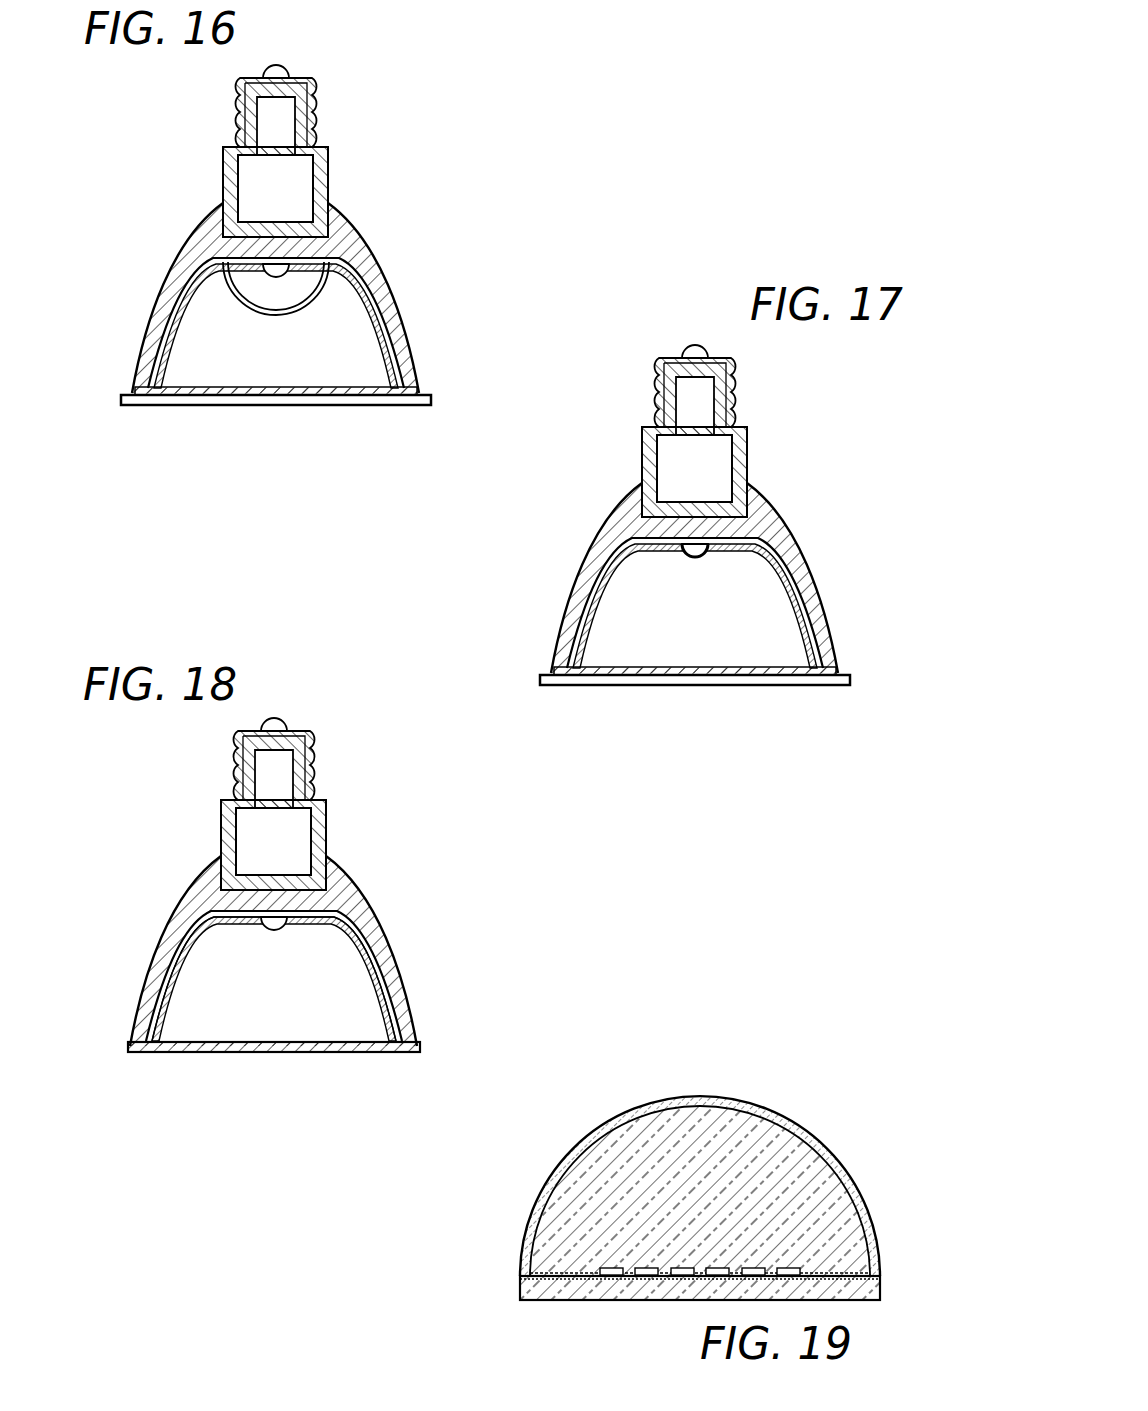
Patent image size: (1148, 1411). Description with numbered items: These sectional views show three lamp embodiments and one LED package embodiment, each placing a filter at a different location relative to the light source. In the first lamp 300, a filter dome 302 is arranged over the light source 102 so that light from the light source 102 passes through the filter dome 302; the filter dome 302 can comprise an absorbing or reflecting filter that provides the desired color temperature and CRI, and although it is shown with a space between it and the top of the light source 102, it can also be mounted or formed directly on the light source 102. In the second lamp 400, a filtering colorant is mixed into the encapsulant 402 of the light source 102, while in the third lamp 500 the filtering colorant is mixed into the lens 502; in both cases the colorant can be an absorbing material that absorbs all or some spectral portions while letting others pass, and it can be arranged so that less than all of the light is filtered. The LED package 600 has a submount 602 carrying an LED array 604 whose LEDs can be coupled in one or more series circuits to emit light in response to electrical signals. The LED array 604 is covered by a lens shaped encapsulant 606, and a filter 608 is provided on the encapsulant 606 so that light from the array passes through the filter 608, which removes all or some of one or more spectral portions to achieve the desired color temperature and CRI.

In FIG. 16, the light source 102 is at (272, 274).
In FIG. 17, the light source 102 is at (693, 558).
In FIG. 18, the light source 102 is at (271, 931).
In FIG. 16, the lamp 300 is at (404, 183).
In FIG. 16, the filter dome 302 is at (322, 304).
In FIG. 17, the lamp 400 is at (806, 438).
In FIG. 17, the encapsulant 402 is at (707, 558).
In FIG. 18, the lamp 500 is at (404, 832).
In FIG. 18, the lens 502 is at (363, 1043).
In FIG. 19, the LED package 600 is at (788, 1074).
In FIG. 19, the submount 602 is at (520, 1288).
In FIG. 19, the LED array 604 is at (612, 1267).
In FIG. 19, the encapsulant 606 is at (806, 1153).
In FIG. 19, the filter 608 is at (678, 1098).